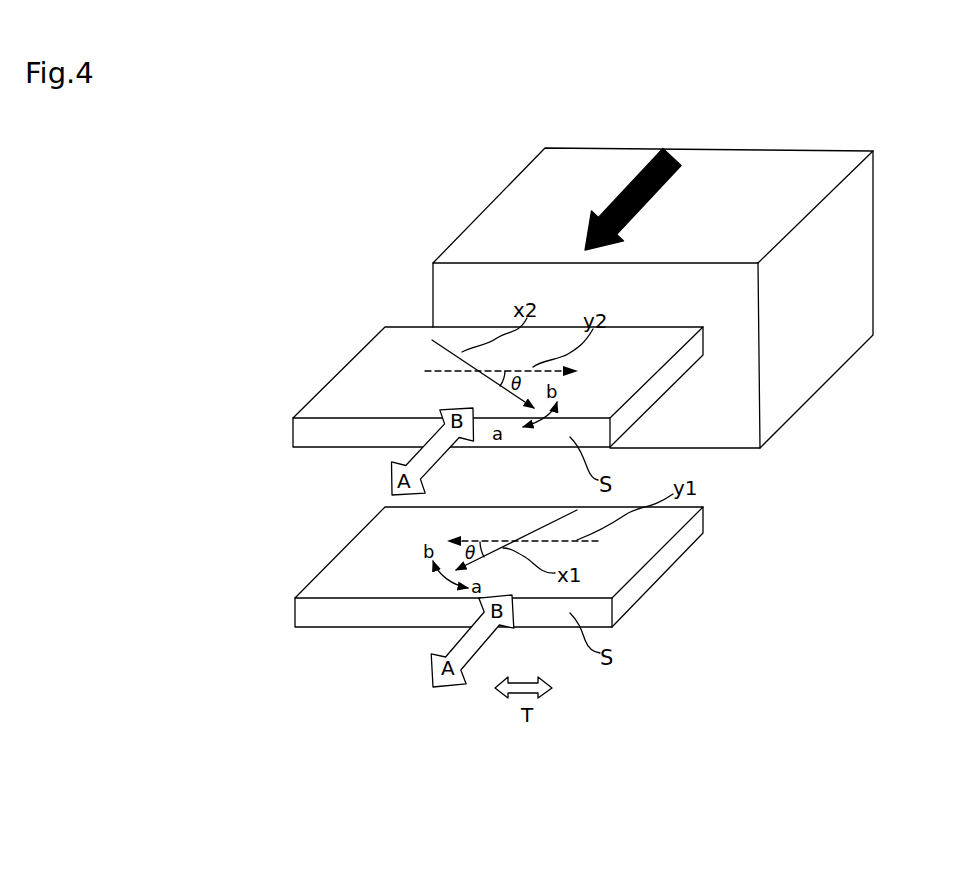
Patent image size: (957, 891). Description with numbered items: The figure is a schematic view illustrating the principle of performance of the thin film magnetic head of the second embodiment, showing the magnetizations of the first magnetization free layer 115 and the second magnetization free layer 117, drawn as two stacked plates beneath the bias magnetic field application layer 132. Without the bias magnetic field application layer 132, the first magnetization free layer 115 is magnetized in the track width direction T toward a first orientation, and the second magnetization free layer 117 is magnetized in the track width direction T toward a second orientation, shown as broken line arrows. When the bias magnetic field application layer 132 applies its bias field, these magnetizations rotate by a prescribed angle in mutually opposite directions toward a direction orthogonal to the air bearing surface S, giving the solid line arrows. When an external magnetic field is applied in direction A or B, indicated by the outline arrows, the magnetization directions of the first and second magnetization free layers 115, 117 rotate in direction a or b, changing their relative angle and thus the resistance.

The bias magnetic field application layer 132 is at (495, 202).
The second magnetization free layer 117 is at (350, 362).
The first magnetization free layer 115 is at (350, 542).